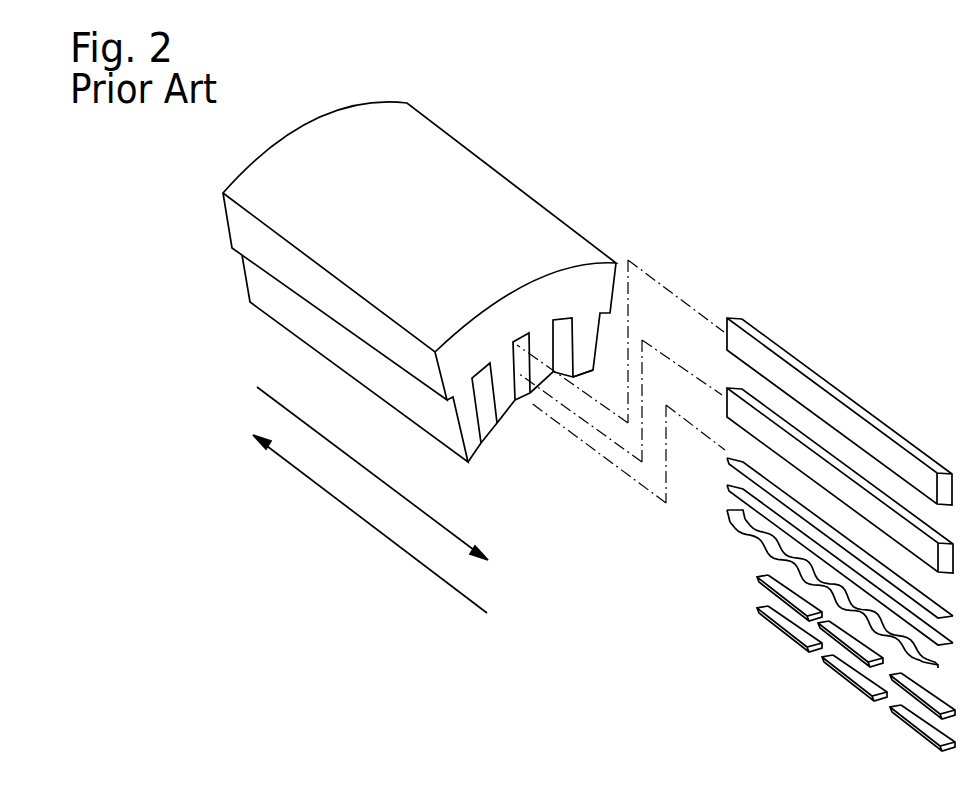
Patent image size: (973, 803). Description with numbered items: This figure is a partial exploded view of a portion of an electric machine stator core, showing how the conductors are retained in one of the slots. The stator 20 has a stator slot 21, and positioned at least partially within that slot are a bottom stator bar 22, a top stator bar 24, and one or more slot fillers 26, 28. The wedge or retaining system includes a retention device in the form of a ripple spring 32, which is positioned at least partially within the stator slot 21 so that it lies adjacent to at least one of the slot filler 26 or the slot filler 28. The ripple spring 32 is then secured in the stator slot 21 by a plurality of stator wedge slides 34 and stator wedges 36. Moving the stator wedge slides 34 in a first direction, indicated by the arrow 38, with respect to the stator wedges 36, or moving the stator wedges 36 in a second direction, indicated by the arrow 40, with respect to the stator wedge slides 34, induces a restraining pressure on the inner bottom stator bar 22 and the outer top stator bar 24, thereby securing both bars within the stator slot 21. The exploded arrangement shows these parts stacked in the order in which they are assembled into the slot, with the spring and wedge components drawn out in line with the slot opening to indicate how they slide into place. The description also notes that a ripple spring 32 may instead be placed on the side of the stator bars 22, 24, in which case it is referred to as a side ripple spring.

The stator 20 is at (502, 160).
The stator slot 21 is at (487, 408).
The bottom stator bar 22 is at (750, 327).
The top stator bar 24 is at (742, 388).
The slot filler 26 is at (741, 460).
The slot filler 28 is at (737, 486).
The ripple spring 32 is at (738, 520).
The stator wedge slides 34 is at (758, 576).
The stator wedges 36 is at (762, 608).
The arrow 38 is at (408, 554).
The arrow 40 is at (448, 529).